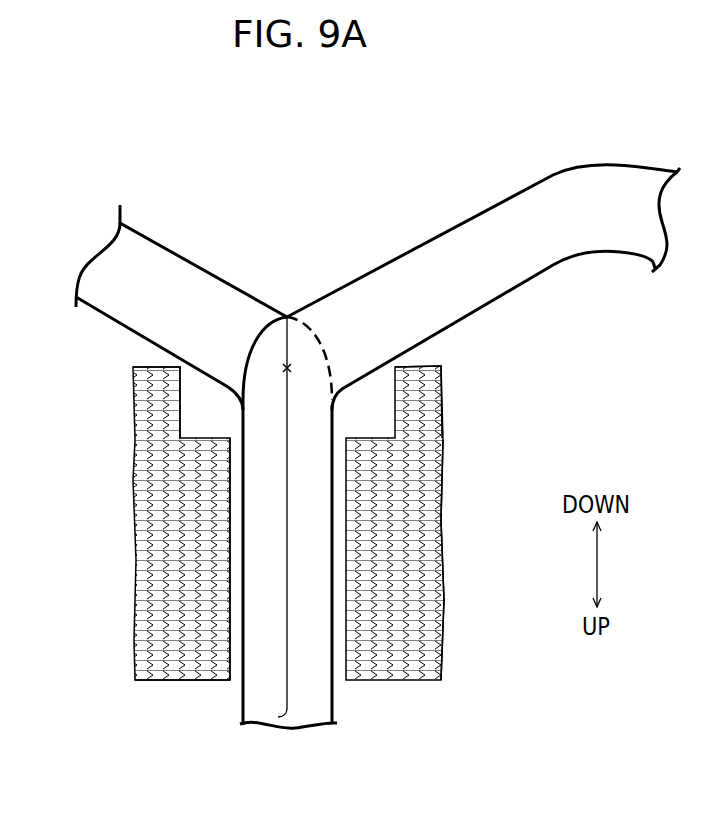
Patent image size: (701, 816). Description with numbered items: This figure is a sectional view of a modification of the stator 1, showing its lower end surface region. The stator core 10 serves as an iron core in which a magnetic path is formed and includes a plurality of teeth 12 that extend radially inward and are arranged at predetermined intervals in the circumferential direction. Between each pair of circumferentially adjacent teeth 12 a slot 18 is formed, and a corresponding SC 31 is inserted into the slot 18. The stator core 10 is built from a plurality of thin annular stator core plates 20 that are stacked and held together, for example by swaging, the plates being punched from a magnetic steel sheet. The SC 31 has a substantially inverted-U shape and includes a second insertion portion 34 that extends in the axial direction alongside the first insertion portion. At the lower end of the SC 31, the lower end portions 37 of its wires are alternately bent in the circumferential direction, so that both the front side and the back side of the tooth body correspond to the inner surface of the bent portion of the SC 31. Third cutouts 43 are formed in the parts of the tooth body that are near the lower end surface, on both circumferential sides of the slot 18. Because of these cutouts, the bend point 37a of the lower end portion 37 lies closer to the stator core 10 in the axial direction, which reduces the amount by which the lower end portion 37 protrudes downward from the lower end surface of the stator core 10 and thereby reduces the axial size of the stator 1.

The stator 1 is at (293, 147).
The SC 31 is at (188, 252).
The lower end portion 37 is at (135, 293).
The bend point 37a is at (287, 362).
The second insertion portion 34 is at (294, 535).
The third cutout 43 is at (178, 392).
The slot 18 is at (215, 514).
The tooth 12 is at (167, 685).
The stator core 10 is at (202, 687).
The stator core plate 20 is at (432, 537).